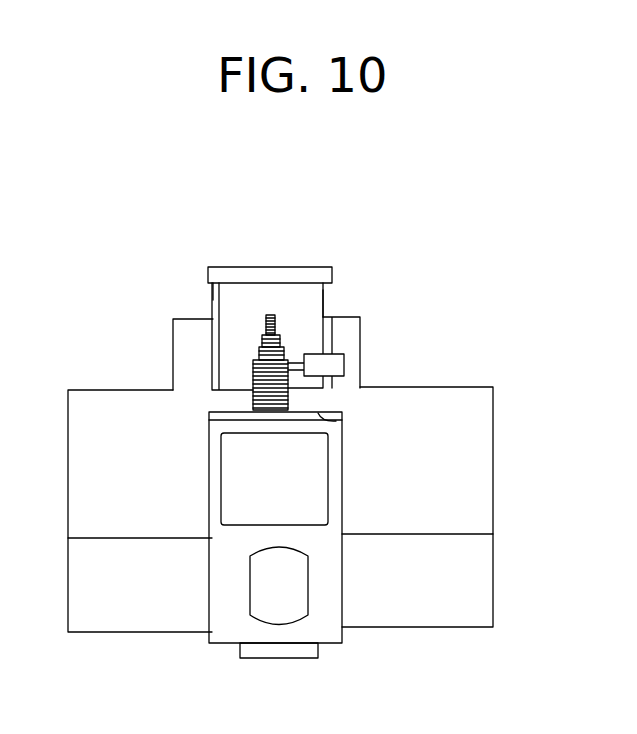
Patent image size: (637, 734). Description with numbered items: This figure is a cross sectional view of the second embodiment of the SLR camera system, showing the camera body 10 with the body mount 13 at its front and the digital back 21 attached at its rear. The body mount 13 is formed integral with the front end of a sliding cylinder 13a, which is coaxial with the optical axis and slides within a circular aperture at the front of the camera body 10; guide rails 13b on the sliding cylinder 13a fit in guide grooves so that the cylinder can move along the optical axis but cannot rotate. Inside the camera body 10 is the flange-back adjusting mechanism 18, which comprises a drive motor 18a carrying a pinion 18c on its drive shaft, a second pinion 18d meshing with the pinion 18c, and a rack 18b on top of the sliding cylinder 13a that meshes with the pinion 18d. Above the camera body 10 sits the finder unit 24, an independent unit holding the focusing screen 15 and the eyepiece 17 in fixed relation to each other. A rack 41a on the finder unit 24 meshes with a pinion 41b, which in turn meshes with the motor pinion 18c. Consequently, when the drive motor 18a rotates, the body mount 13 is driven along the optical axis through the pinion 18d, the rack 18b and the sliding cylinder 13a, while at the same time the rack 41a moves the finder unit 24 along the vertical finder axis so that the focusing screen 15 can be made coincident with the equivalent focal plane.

The camera body 10 is at (480, 427).
The body mount 13 is at (307, 265).
The sliding cylinder 13a is at (318, 296).
The guide rails 13b is at (212, 330).
The focusing screen 15 is at (318, 455).
The eyepiece 17 is at (300, 590).
The flange-back adjusting mechanism 18 is at (297, 203).
The drive motor 18a is at (322, 354).
The rack 18b is at (297, 352).
The pinion 18c is at (258, 350).
The pinion 18d is at (213, 265).
The digital back 21 is at (487, 608).
The finder unit 24 is at (342, 493).
The rack 41a is at (318, 416).
The pinion 41b is at (250, 404).